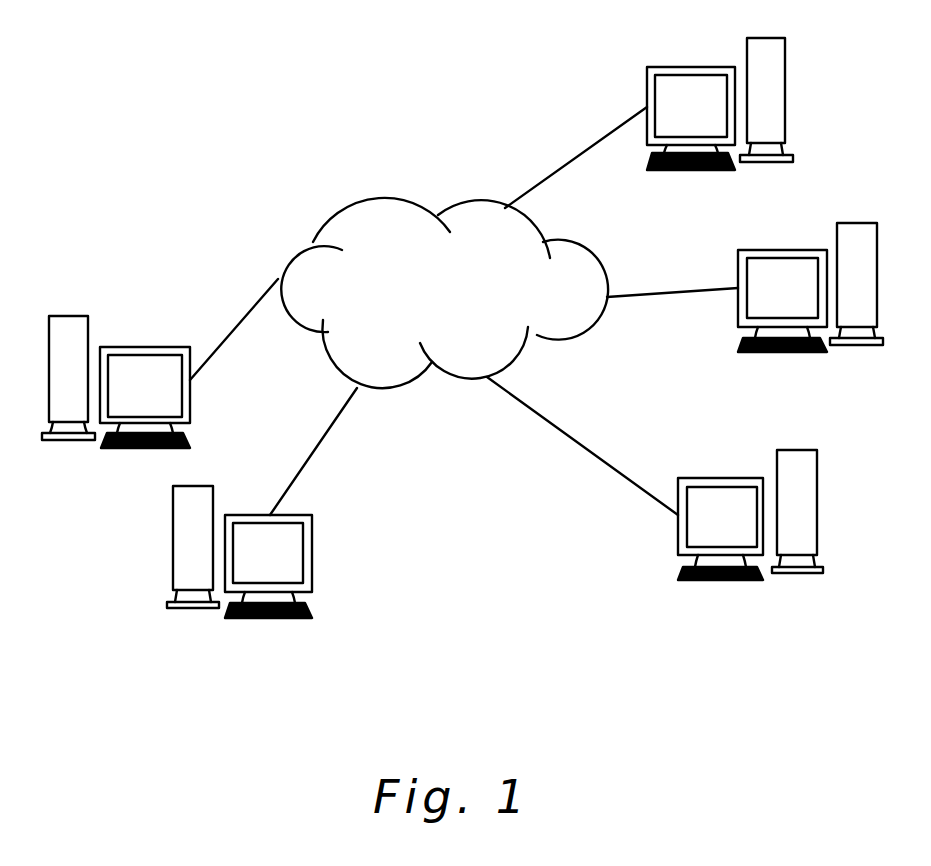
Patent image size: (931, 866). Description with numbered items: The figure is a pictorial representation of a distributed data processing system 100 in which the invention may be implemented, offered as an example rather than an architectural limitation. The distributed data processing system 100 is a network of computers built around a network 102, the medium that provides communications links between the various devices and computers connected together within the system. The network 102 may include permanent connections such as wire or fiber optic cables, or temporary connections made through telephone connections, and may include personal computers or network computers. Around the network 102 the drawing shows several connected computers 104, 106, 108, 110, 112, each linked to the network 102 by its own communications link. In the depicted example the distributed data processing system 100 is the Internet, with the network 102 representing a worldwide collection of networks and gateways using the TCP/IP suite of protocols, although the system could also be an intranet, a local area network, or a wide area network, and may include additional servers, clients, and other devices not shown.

The distributed data processing system 100 is at (472, 543).
The network 102 is at (458, 288).
The computer 104 is at (143, 347).
The computer 106 is at (647, 70).
The computer 108 is at (738, 325).
The computer 110 is at (720, 478).
The computer 112 is at (312, 553).